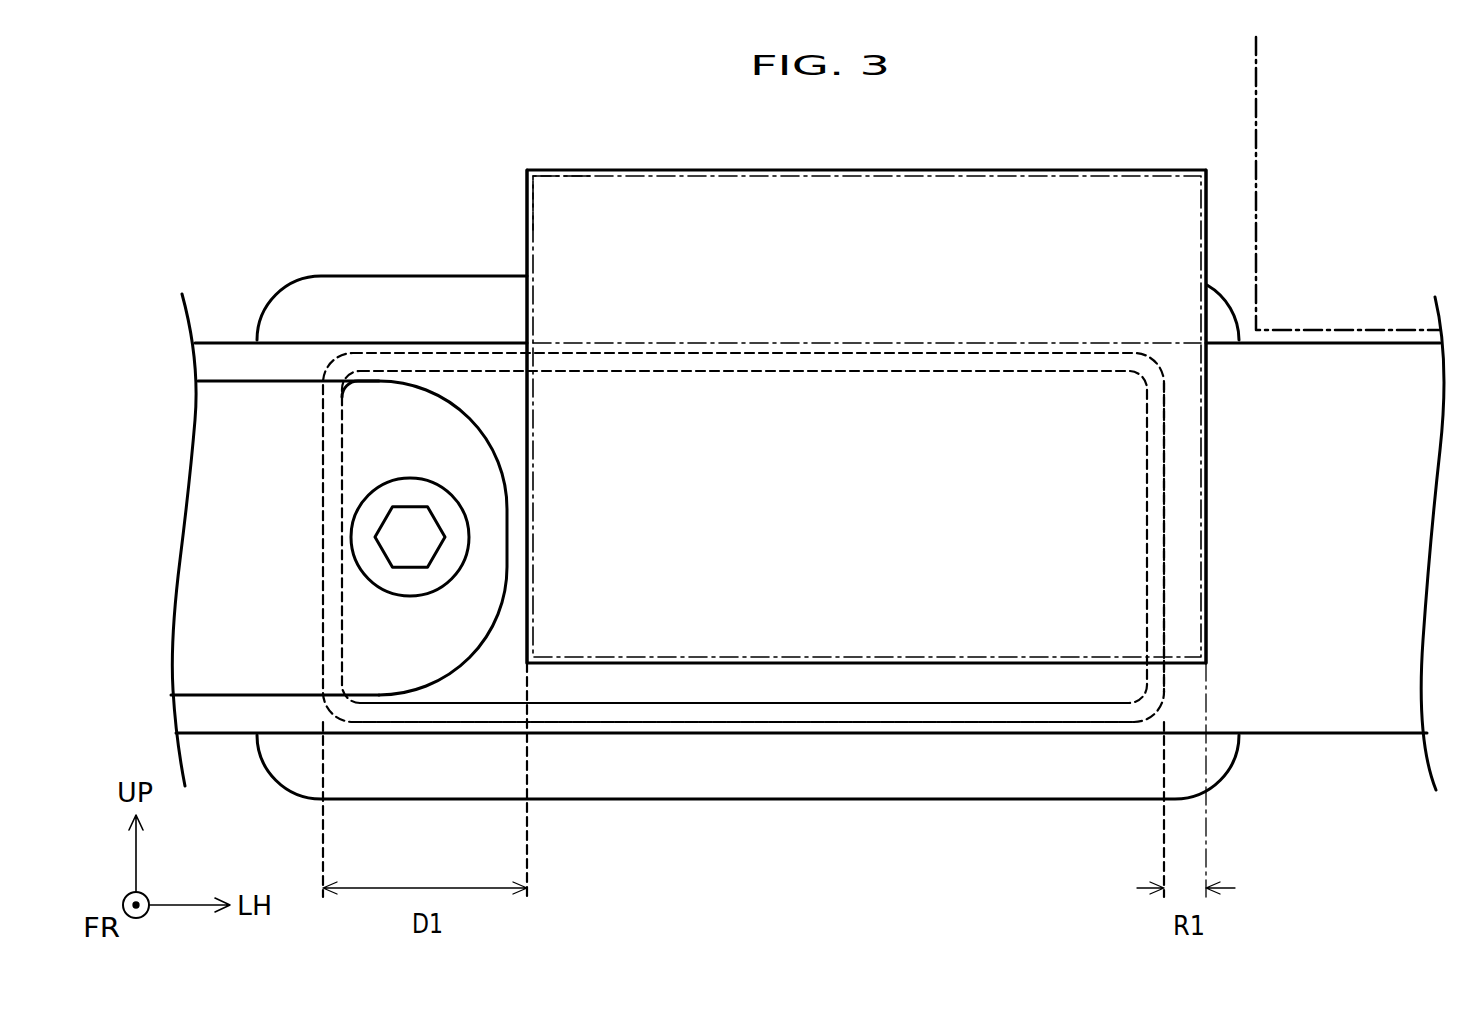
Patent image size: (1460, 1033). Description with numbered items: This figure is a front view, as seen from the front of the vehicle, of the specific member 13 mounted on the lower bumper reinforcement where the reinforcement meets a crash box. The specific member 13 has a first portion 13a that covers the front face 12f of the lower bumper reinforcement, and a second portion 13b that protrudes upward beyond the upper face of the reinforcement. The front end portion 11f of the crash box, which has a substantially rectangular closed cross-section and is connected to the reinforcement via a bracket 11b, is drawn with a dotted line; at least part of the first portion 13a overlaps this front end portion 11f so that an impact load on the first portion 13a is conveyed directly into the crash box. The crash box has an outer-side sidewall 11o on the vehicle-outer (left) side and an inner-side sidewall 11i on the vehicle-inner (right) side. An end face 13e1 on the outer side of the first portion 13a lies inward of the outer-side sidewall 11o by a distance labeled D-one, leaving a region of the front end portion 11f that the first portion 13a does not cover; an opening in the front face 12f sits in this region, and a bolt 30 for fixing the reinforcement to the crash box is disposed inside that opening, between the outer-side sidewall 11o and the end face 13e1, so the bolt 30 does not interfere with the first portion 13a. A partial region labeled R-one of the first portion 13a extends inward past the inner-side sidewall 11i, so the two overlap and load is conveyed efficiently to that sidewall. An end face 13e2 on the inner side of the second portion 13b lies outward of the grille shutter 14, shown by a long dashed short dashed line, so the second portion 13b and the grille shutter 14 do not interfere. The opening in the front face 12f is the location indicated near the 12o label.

The outer-side sidewall 11o is at (323, 587).
The inner-side sidewall 11i is at (1165, 610).
The bracket 11b is at (583, 777).
The front end portion 11f is at (717, 715).
The outer portion of side member 12o is at (300, 382).
The front face 12f is at (1335, 685).
The specific member 13 is at (642, 135).
The first portion 13a is at (527, 393).
The second portion 13b is at (533, 228).
The end face 13e1 is at (525, 443).
The end face 13e2 is at (1208, 232).
The grille shutter 14 is at (1253, 85).
The bolt 30 is at (397, 536).